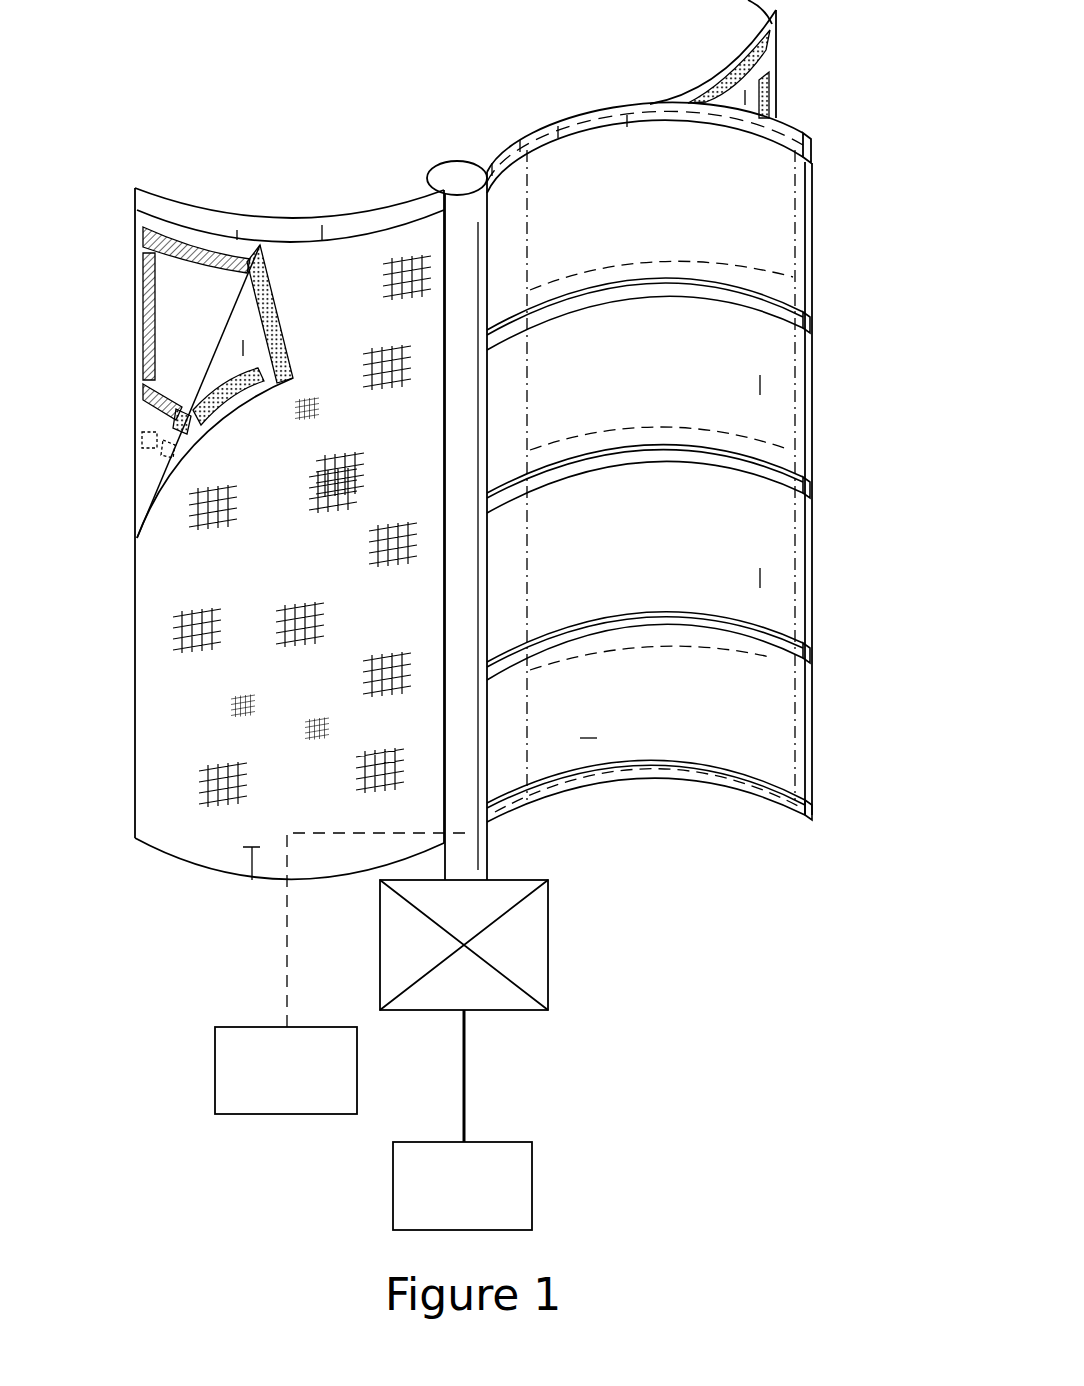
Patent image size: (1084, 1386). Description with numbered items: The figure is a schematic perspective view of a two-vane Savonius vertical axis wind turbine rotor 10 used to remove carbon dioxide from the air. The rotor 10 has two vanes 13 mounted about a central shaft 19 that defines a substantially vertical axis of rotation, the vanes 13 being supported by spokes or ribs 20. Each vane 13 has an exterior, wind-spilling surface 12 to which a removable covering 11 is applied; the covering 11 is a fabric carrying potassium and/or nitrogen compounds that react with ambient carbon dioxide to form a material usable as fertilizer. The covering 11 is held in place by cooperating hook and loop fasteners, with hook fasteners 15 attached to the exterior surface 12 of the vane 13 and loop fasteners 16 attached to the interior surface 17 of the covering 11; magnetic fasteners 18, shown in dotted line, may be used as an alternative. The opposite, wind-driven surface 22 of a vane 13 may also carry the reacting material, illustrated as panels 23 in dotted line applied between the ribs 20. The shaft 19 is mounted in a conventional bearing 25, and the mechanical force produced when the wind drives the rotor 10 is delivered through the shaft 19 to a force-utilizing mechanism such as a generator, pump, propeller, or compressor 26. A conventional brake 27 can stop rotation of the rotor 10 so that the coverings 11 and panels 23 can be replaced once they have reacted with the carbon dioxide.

The vertical axis wind turbine rotor 10 is at (144, 140).
The removable covering 11 is at (252, 868).
The exterior surface 12 is at (177, 332).
The rotor vane 13 is at (103, 712).
The hook fastener 15 is at (203, 282).
The loop fastener 16 is at (265, 300).
The interior surface 17 is at (243, 348).
The magnetic fastener 18 is at (163, 452).
The central shaft 19 is at (468, 574).
The spoke 20 is at (737, 293).
The wind-driven surface 22 is at (590, 738).
The panel 23 is at (762, 385).
The bearing 25 is at (540, 948).
The compressor 26 is at (525, 1150).
The brake 27 is at (215, 1073).